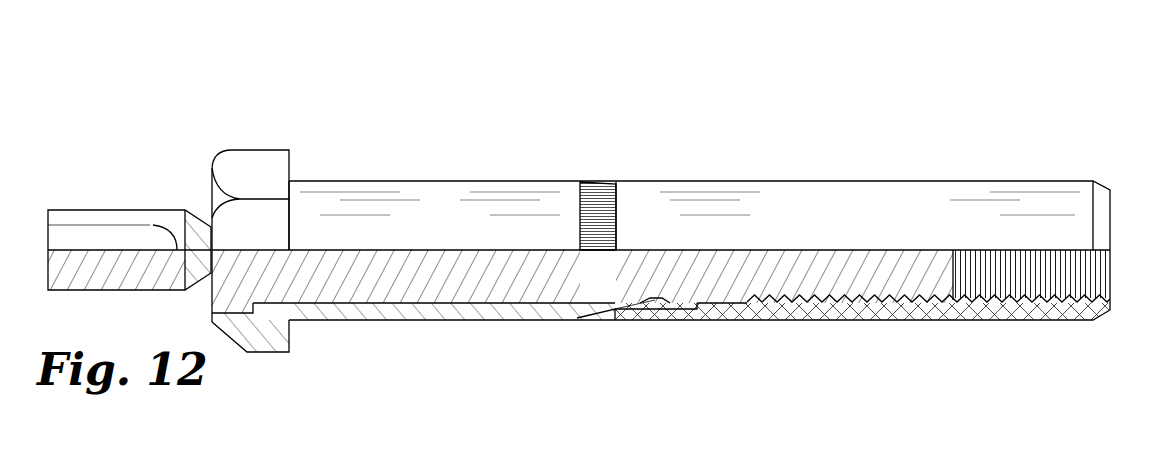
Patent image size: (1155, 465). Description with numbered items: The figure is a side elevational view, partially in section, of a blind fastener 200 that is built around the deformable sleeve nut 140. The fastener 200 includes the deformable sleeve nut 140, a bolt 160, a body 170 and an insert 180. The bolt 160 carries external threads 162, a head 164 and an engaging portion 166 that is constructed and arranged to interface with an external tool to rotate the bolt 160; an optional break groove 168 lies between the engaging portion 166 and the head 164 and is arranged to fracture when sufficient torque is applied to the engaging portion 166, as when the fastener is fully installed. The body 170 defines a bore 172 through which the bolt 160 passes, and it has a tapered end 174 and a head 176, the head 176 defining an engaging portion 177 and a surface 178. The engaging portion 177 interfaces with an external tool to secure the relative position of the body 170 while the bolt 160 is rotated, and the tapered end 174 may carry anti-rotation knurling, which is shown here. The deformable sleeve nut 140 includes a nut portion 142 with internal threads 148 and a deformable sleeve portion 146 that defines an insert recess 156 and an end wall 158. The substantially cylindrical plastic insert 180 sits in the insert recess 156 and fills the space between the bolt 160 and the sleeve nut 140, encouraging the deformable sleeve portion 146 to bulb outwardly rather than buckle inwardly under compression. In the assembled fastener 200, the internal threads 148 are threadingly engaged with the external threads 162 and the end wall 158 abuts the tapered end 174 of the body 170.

The deformable sleeve nut 140 is at (943, 181).
The nut portion 142 is at (1070, 118).
The deformable sleeve portion 146 is at (755, 127).
The internal threads 148 is at (940, 298).
The insert recess 156 is at (655, 302).
The end wall 158 is at (613, 182).
The bolt 160 is at (607, 287).
The external threads 162 is at (1023, 300).
The head 164 is at (243, 302).
The engaging portion 166 is at (86, 235).
The break groove 168 is at (200, 208).
The body 170 is at (441, 206).
The bore 172 is at (437, 303).
The tapered end 174 is at (590, 181).
The head 176 is at (270, 158).
The engaging portion 177 is at (237, 220).
The surface 178 is at (289, 212).
The insert 180 is at (680, 305).
The fastener 200 is at (833, 115).